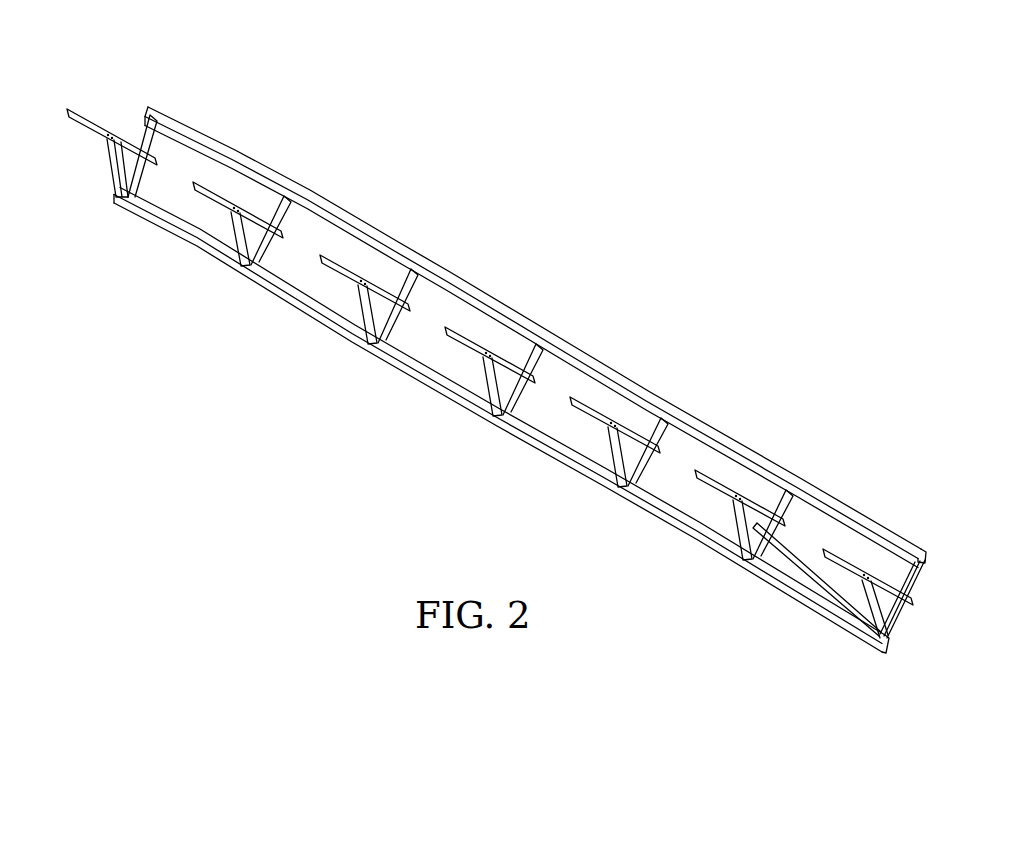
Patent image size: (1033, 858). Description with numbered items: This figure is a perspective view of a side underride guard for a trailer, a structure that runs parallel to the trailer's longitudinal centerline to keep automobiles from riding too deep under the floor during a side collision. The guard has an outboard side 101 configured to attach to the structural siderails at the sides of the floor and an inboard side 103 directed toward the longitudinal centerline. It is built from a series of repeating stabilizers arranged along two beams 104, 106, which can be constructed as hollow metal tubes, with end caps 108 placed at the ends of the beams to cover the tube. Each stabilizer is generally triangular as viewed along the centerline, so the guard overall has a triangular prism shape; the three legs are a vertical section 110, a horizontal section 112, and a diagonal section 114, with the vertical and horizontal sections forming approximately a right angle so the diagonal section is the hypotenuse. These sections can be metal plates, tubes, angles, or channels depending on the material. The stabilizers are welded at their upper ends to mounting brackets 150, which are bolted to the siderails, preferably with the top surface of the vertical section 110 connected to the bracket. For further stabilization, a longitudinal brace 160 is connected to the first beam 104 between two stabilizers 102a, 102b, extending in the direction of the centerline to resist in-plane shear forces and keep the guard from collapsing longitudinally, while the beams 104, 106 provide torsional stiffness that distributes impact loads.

The outboard side 101 is at (812, 634).
The first stabilizer 102a is at (752, 487).
The second stabilizer 102b is at (884, 552).
The inboard side 103 is at (666, 379).
The first beam 104 is at (342, 350).
The second beam 106 is at (473, 274).
The end cap 108 is at (928, 563).
The vertical section 110 is at (105, 177).
The horizontal section 112 is at (140, 114).
The diagonal section 114 is at (155, 177).
The mounting bracket 150 is at (78, 96).
The longitudinal brace 160 is at (808, 530).